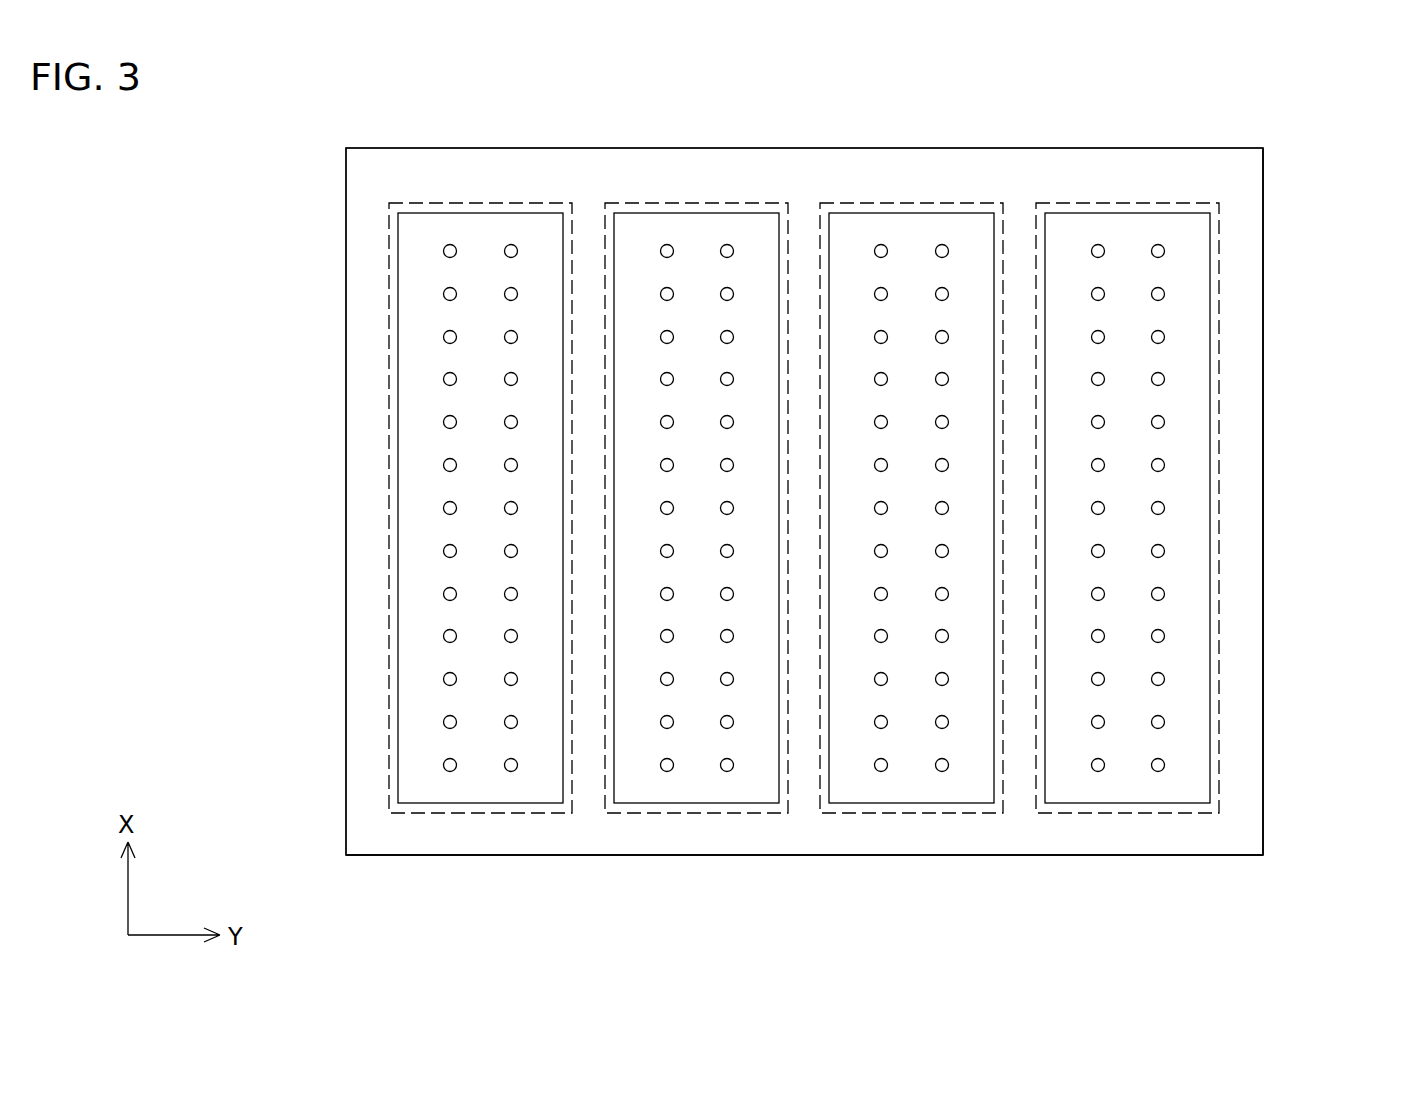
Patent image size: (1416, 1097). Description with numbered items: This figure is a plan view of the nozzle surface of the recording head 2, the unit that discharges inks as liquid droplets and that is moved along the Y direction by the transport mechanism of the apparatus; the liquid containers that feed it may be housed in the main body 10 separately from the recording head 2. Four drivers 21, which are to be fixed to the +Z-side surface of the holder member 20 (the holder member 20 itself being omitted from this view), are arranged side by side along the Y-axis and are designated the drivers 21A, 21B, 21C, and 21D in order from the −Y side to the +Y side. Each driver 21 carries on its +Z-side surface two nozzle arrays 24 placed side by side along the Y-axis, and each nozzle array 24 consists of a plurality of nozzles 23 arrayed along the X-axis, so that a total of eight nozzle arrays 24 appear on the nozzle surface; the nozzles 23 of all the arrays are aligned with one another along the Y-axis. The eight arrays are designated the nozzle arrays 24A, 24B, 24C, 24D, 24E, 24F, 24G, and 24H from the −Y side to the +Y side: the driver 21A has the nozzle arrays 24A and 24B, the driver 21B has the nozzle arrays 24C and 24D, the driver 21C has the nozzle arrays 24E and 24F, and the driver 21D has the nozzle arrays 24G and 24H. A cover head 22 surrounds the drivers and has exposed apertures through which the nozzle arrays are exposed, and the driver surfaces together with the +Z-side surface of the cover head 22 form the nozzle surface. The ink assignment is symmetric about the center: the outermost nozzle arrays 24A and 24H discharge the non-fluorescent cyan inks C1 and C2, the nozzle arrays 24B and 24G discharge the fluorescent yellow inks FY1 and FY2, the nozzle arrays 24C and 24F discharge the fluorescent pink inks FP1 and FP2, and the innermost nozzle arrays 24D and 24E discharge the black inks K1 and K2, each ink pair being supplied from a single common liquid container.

The recording head 2 is at (1323, 210).
The main body 10 is at (370, 273).
The holder member 20 is at (1250, 790).
The driver 21 is at (824, 573).
The driver 21A is at (445, 562).
The driver 21B is at (640, 813).
The driver 21C is at (858, 813).
The driver 21D is at (1157, 573).
The cover head 22 is at (1263, 420).
The nozzle 23 is at (443, 509).
The nozzle array 24 is at (742, 421).
The nozzle array 24A is at (368, 421).
The nozzle array 24B is at (511, 232).
The nozzle array 24C is at (667, 232).
The nozzle array 24D is at (727, 232).
The nozzle array 24E is at (881, 232).
The nozzle array 24F is at (942, 232).
The nozzle array 24G is at (1098, 232).
The nozzle array 24H is at (1158, 232).
The cyan ink C1 is at (457, 828).
The fluorescent yellow ink FY1 is at (518, 828).
The fluorescent pink ink FP1 is at (674, 828).
The black ink K1 is at (734, 828).
The black ink K2 is at (888, 828).
The fluorescent pink ink FP2 is at (949, 828).
The fluorescent yellow ink FY2 is at (1105, 828).
The cyan ink C2 is at (1165, 828).